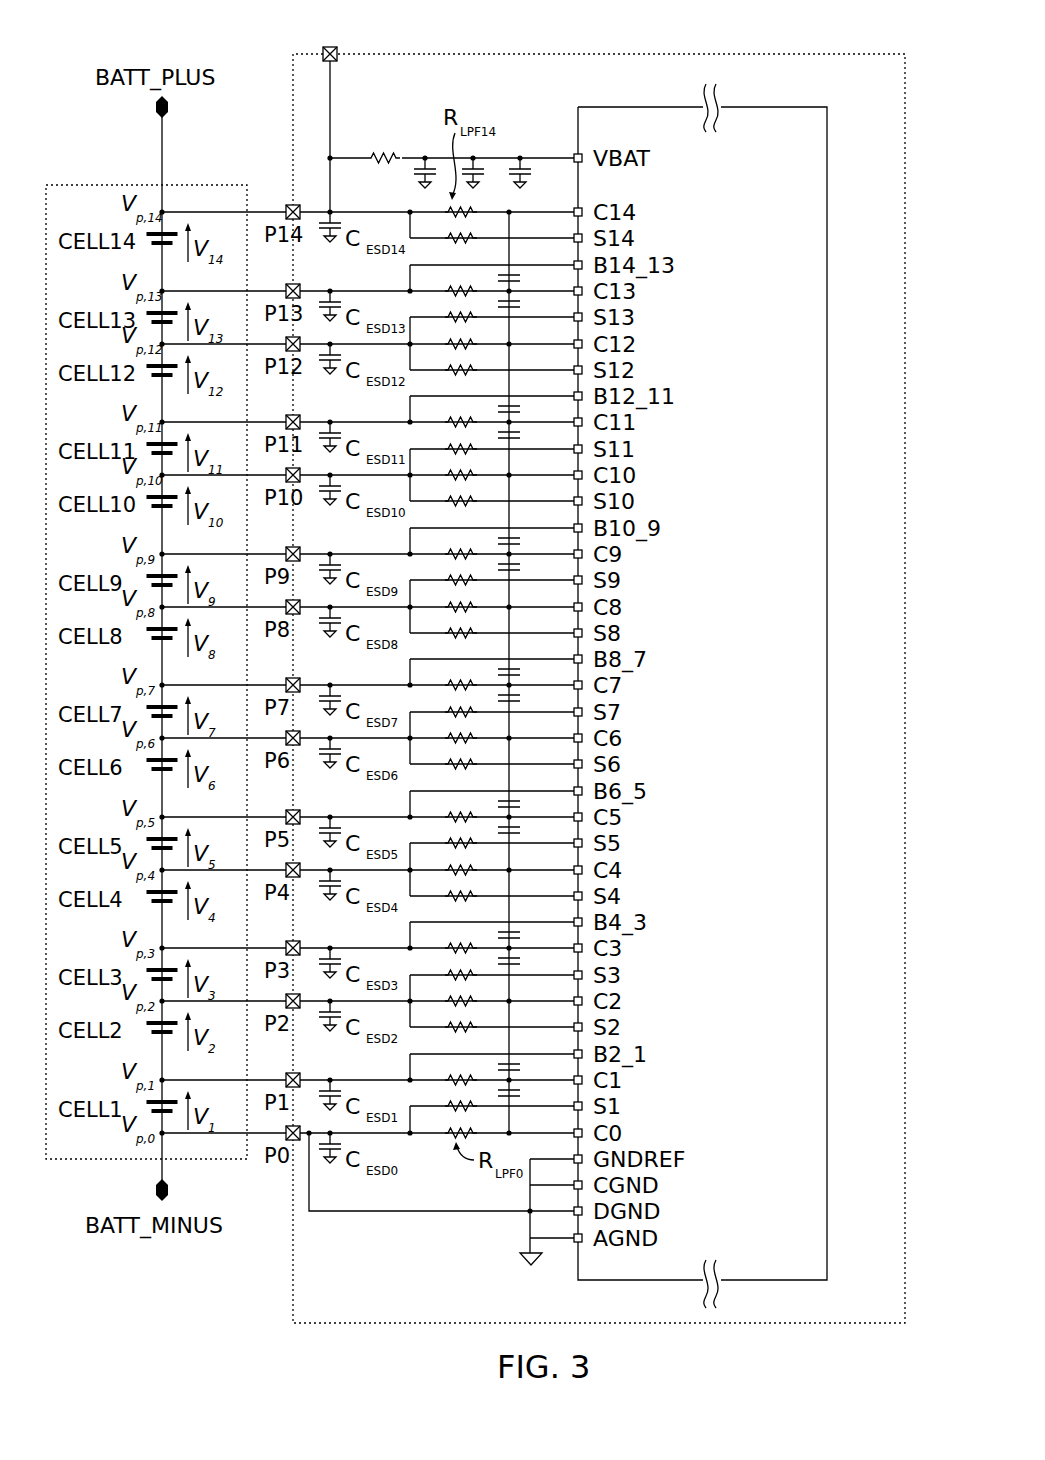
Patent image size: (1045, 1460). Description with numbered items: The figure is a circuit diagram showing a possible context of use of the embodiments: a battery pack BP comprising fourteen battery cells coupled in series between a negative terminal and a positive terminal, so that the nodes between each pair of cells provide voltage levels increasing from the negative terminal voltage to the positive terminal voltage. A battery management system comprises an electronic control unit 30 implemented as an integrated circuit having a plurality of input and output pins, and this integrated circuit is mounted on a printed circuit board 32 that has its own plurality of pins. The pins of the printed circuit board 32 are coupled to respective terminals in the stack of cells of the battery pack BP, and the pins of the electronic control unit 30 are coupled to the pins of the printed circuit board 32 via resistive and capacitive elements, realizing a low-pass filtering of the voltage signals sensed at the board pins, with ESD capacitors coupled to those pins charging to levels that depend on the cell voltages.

The electronic control unit 30 is at (815, 202).
The printed circuit board 32 is at (817, 55).
The battery pack BP is at (92, 193).